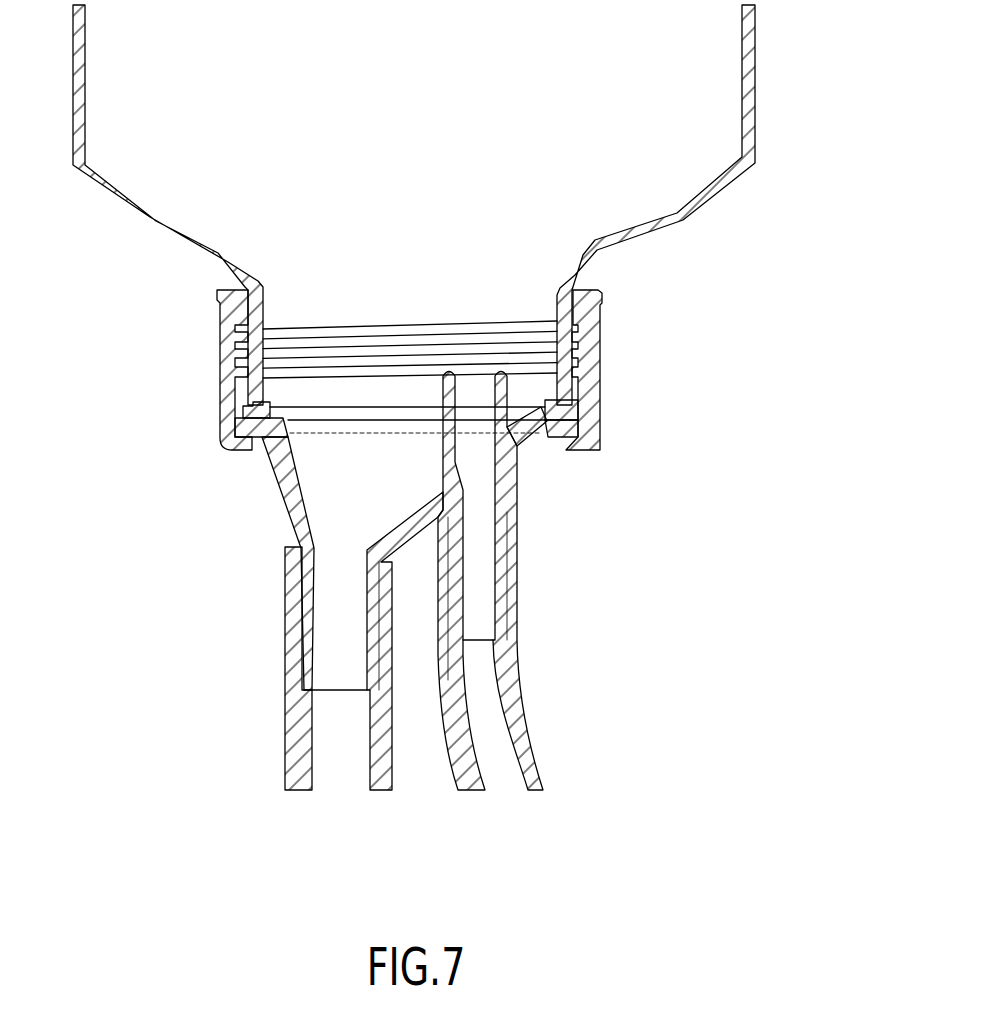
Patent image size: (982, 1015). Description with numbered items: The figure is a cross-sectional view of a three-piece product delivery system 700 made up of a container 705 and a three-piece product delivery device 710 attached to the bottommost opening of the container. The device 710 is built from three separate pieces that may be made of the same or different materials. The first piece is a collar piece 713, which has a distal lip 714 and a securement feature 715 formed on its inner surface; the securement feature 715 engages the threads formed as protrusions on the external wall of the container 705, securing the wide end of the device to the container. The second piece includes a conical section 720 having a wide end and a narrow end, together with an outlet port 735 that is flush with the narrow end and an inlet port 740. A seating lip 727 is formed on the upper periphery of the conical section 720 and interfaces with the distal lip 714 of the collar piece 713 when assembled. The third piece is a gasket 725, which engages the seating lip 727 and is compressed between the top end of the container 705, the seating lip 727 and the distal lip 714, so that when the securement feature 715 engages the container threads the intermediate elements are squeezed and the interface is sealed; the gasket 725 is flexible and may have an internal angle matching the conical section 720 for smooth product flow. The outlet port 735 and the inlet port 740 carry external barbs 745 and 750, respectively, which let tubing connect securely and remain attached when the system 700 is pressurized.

The three-piece product delivery system 700 is at (436, 470).
The container 705 is at (757, 82).
The three-piece product delivery device 710 is at (346, 371).
The collar piece 713 is at (215, 333).
The distal lip 714 is at (557, 448).
The securement feature 715 is at (597, 380).
The conical section 720 is at (418, 473).
The gasket 725 is at (563, 442).
The seating lip 727 is at (575, 428).
The outlet port 735 is at (299, 600).
The inlet port 740 is at (515, 550).
The external barb 745 is at (301, 645).
The external barb 750 is at (513, 605).